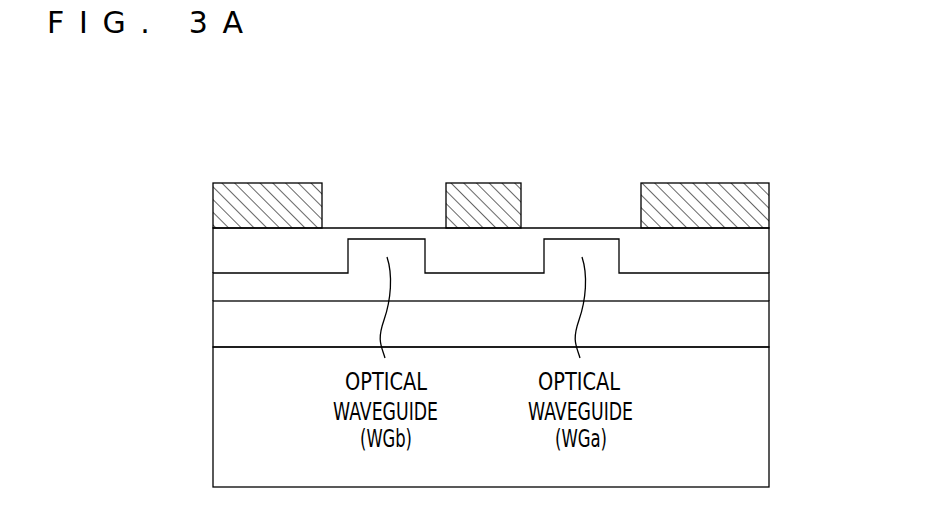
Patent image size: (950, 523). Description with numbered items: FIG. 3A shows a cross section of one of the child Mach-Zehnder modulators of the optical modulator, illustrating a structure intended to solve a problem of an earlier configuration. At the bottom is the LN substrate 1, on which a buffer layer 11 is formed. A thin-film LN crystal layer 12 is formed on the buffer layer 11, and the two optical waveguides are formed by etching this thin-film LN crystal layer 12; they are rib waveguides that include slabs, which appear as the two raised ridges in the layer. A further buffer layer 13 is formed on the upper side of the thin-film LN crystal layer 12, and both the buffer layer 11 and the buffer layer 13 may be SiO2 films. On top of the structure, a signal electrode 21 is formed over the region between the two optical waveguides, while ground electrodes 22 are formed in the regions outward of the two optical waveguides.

The LN substrate 1 is at (769, 413).
The buffer layer 11 is at (769, 322).
The thin-film LN crystal layer 12 is at (769, 287).
The buffer layer 13 is at (769, 250).
The signal electrode 21 is at (480, 182).
The ground electrode 22 is at (265, 182).